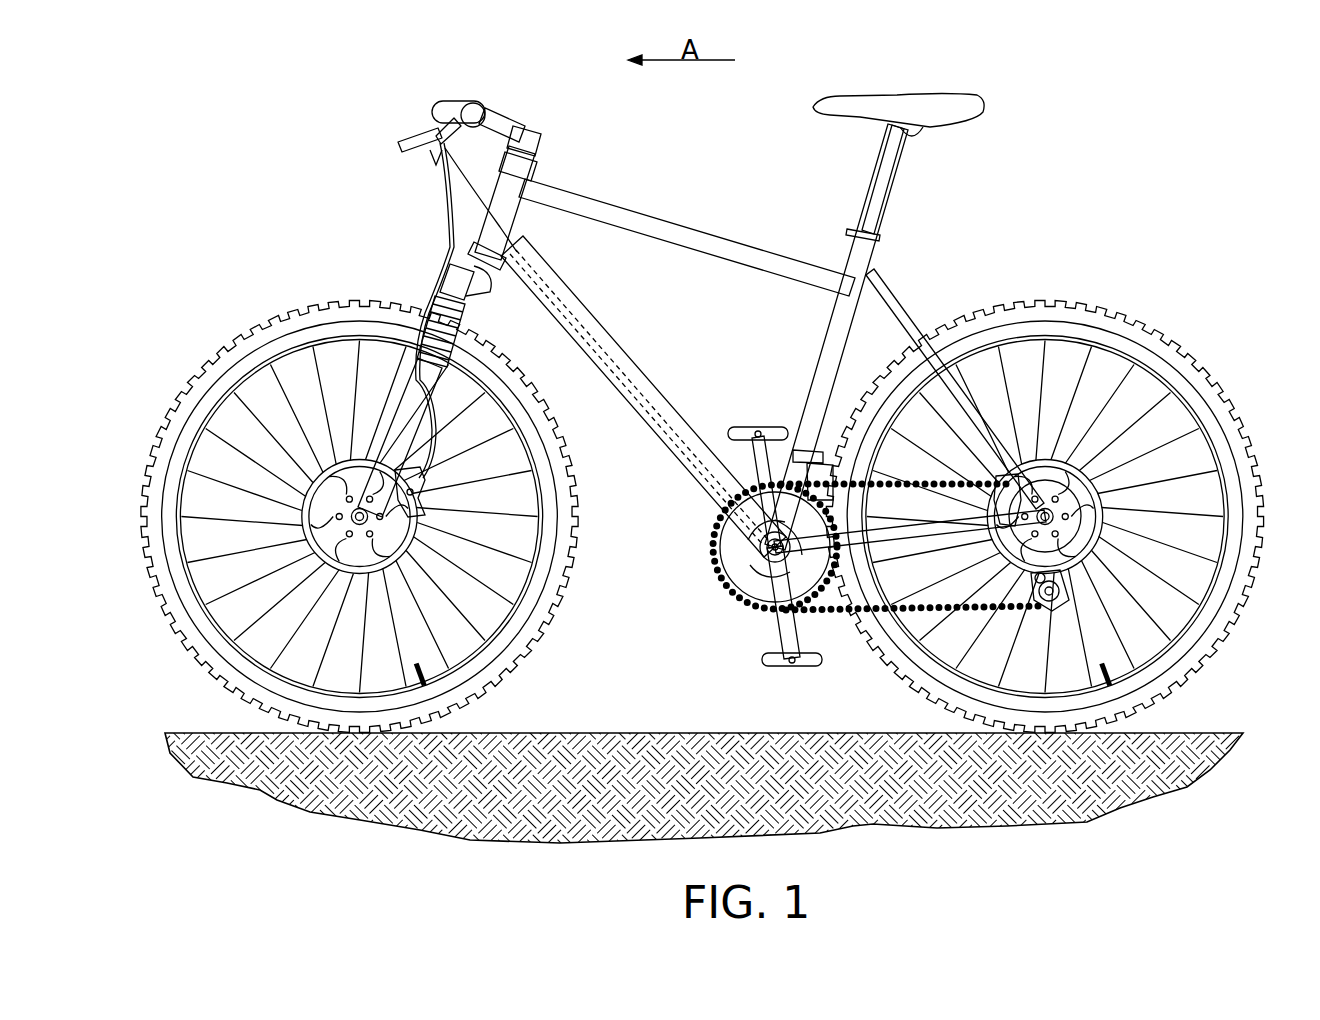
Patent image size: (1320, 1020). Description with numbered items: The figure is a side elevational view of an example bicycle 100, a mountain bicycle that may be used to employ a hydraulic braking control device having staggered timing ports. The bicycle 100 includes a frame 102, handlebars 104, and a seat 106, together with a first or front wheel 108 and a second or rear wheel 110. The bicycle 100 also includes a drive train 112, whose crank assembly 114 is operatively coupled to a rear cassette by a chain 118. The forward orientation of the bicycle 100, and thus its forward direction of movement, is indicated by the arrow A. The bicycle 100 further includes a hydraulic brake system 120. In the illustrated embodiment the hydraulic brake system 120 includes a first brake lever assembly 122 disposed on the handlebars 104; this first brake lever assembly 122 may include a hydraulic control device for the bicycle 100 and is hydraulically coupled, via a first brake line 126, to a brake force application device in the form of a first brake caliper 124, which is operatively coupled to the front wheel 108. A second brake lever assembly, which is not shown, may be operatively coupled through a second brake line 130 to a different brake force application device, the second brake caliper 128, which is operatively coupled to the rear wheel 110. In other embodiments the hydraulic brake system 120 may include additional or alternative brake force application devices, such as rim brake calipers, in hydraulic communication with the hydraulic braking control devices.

The bicycle 100 is at (1122, 97).
The frame 102 is at (695, 245).
The handlebars 104 is at (479, 106).
The seat 106 is at (920, 104).
The front wheel 108 is at (228, 355).
The rear wheel 110 is at (1160, 345).
The drive train 112 is at (718, 598).
The crank assembly 114 is at (764, 630).
The chain 118 is at (716, 575).
The hydraulic brake system 120 is at (414, 166).
The first brake lever assembly 122 is at (412, 140).
The first brake caliper 124 is at (422, 503).
The first brake line 126 is at (437, 253).
The second brake caliper 128 is at (996, 478).
The second brake line 130 is at (535, 170).